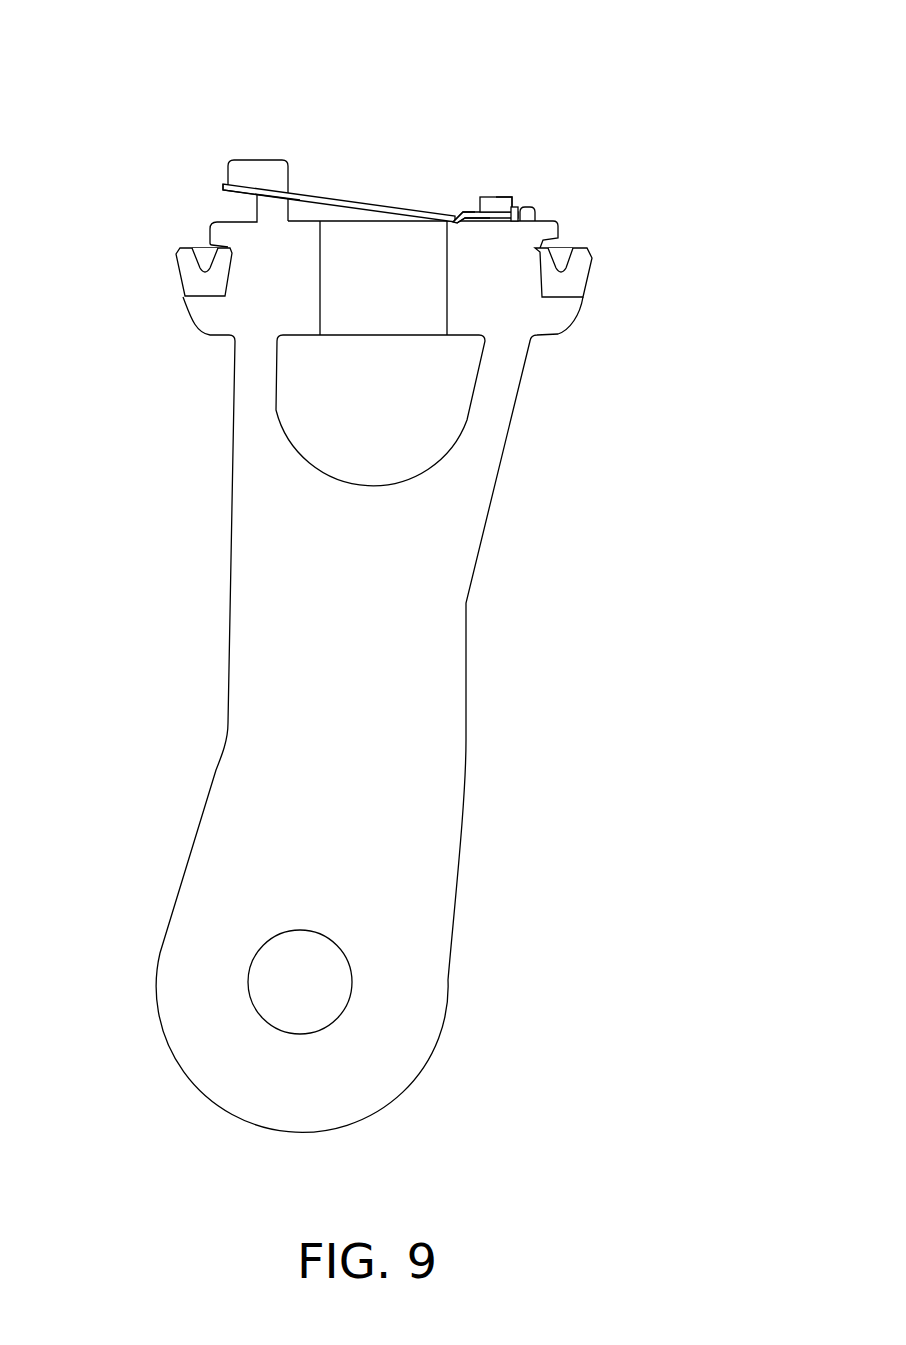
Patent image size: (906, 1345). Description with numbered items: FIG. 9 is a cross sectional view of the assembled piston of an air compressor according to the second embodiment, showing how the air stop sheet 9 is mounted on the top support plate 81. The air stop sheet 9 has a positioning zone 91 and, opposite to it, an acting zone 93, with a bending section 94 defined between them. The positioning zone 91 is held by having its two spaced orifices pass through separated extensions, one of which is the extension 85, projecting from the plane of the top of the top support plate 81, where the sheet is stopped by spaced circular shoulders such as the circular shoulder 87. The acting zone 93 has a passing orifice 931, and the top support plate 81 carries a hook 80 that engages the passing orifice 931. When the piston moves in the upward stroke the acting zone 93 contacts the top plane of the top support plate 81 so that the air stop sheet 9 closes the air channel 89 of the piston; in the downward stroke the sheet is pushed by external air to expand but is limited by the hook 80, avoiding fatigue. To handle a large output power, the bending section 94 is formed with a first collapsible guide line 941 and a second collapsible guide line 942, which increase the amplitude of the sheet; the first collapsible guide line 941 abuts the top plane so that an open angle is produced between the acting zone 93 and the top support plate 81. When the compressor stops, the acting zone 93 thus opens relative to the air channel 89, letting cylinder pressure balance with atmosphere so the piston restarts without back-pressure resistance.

The air stop sheet 9 is at (477, 116).
The hook 80 is at (263, 165).
The top support plate 81 is at (540, 237).
The extension 85 is at (508, 205).
The circular shoulder 87 is at (512, 210).
The air channel 89 is at (362, 312).
The positioning zone 91 is at (490, 207).
The acting zone 93 is at (332, 200).
The passing orifice 931 is at (298, 195).
The bending section 94 is at (458, 217).
The first collapsible guide line 941 is at (450, 217).
The second collapsible guide line 942 is at (467, 204).